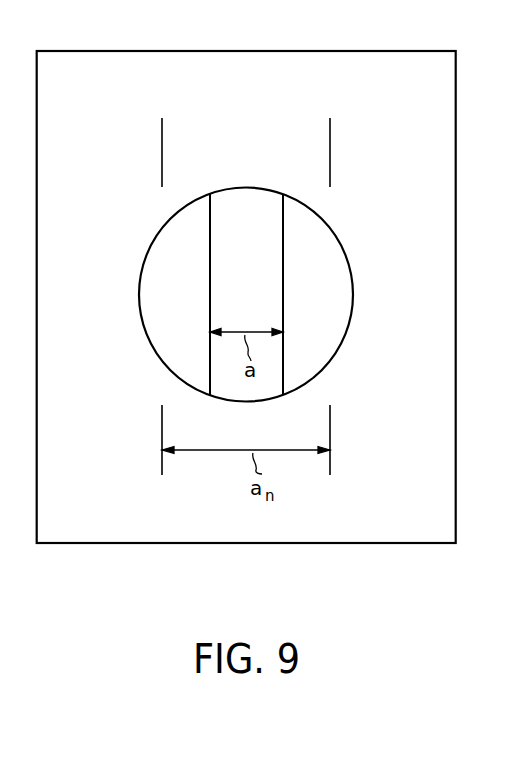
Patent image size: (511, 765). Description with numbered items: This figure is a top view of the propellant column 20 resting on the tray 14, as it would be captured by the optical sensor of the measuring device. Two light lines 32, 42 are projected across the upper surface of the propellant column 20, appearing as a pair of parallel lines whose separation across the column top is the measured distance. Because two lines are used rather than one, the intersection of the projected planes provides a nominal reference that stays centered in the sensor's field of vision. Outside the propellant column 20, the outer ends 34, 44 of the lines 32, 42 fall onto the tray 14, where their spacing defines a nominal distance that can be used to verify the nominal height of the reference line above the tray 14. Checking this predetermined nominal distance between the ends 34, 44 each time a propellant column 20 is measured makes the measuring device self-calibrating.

The tray 14 is at (433, 532).
The propellant column 20 is at (353, 290).
The line 32 is at (283, 218).
The outer end 34 is at (330, 143).
The line 42 is at (210, 218).
The outer end 44 is at (162, 143).